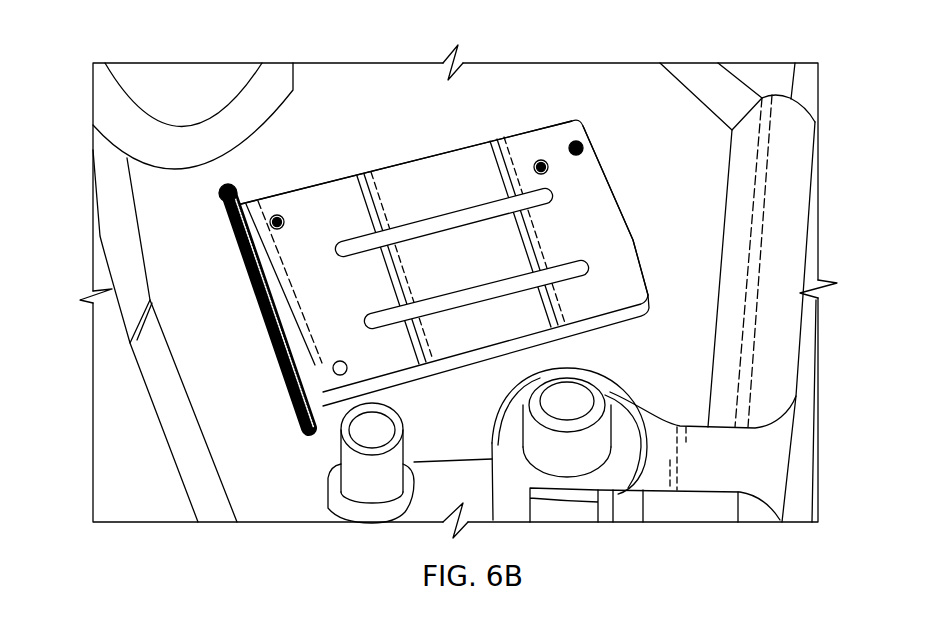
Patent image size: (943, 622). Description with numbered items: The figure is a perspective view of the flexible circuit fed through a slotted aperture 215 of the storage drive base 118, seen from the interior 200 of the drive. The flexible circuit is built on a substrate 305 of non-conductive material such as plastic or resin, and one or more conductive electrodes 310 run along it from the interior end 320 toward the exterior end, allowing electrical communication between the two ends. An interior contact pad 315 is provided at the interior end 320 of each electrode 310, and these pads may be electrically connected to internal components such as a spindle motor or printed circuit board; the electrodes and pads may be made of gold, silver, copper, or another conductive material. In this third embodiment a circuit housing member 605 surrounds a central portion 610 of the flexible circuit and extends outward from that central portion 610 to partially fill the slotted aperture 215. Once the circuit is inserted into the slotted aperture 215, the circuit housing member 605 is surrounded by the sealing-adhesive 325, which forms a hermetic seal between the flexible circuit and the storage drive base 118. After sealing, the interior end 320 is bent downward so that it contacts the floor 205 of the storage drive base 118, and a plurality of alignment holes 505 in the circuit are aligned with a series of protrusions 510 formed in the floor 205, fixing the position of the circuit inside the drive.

The storage drive base 118 is at (146, 202).
The interior 200 is at (467, 212).
The floor 205 is at (257, 500).
The slotted aperture 215 is at (238, 300).
The substrate 305 is at (418, 167).
The conductive electrode 310 is at (383, 239).
The interior contact pad 315 is at (480, 257).
The interior end 320 is at (634, 217).
The sealing-adhesive 325 is at (228, 240).
The alignment hole 505 is at (284, 222).
The protrusion 510 is at (454, 124).
The circuit housing member 605 is at (225, 190).
The central portion 610 is at (268, 288).